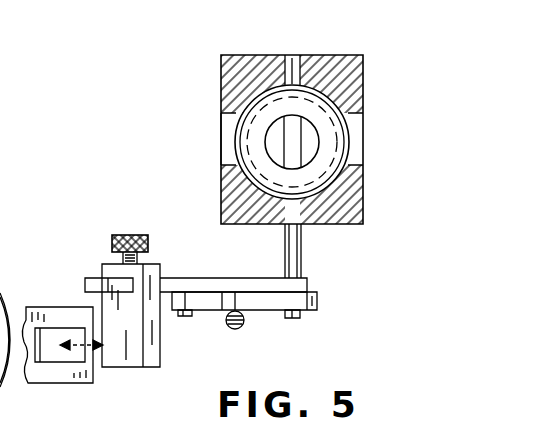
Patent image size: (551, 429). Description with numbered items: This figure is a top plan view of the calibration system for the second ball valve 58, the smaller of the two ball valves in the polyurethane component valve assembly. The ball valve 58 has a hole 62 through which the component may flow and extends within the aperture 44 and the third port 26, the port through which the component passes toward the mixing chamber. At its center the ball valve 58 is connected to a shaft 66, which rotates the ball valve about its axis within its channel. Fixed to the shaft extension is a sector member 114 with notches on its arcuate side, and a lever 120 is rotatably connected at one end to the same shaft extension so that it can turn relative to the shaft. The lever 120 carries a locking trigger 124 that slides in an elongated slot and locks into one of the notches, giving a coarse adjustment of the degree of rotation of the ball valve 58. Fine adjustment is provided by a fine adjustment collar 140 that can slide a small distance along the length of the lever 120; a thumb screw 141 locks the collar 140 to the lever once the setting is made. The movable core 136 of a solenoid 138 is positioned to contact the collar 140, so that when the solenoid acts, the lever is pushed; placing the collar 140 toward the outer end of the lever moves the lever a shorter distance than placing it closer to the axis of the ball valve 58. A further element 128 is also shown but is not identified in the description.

The third port 26 is at (353, 112).
The aperture 44 is at (230, 158).
The hole 62 is at (271, 135).
The second ball valve 58 is at (226, 163).
The sector member 114 is at (318, 300).
The lever 120 is at (190, 278).
The locking trigger 124 is at (203, 303).
The nut 128 is at (232, 329).
The shaft 66 is at (294, 320).
The thumb screw 141 is at (140, 234).
The fine adjustment collar 140 is at (125, 368).
The solenoid 138 is at (52, 372).
The movable core 136 is at (57, 336).